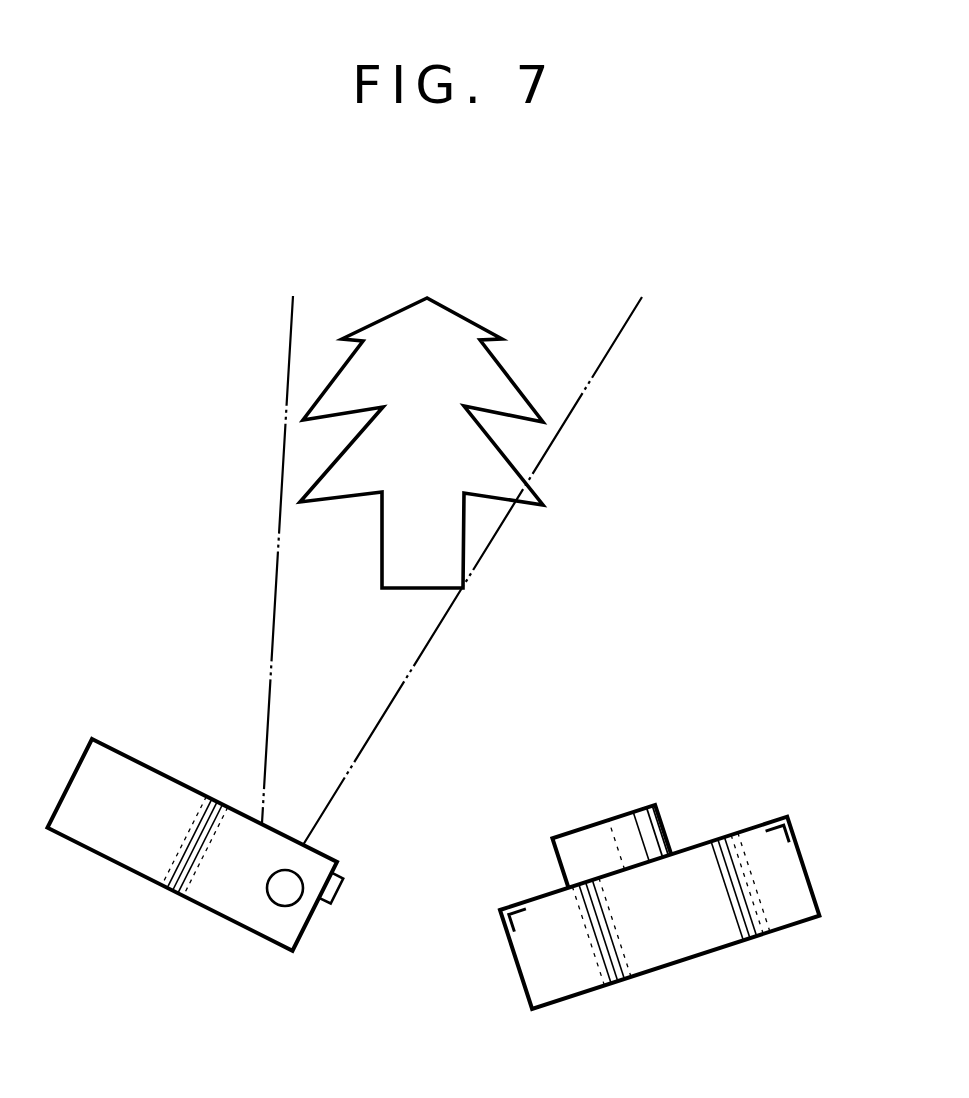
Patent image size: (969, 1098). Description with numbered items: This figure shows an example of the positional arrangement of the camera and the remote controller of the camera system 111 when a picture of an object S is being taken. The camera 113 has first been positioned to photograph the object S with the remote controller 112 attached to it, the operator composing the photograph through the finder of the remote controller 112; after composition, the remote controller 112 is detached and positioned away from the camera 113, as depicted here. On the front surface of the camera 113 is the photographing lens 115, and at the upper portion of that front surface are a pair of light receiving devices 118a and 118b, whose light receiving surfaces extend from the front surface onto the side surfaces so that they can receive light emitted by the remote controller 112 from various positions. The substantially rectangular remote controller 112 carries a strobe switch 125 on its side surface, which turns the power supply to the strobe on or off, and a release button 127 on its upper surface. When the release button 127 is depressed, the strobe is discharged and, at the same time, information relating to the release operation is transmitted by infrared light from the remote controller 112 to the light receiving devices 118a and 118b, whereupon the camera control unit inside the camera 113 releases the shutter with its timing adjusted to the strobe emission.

The object S is at (508, 397).
The camera system 111 is at (637, 851).
The remote controller 112 is at (95, 837).
The camera 113 is at (530, 962).
The photographing lens 115 is at (565, 852).
The light receiving device 118a is at (775, 818).
The light receiving device 118b is at (512, 907).
The strobe switch 125 is at (338, 890).
The release button 127 is at (288, 892).